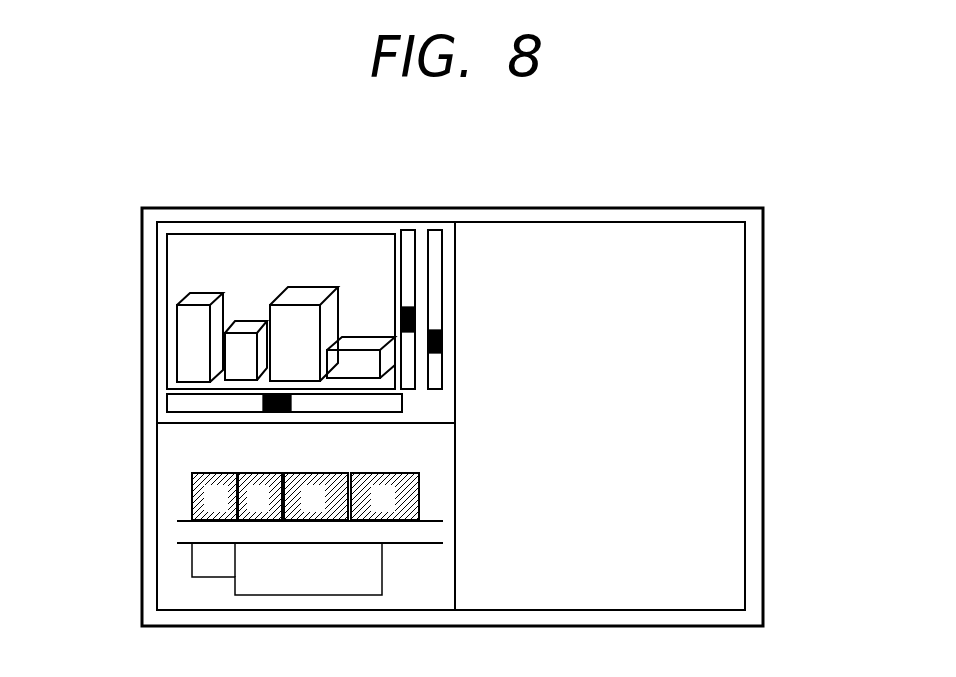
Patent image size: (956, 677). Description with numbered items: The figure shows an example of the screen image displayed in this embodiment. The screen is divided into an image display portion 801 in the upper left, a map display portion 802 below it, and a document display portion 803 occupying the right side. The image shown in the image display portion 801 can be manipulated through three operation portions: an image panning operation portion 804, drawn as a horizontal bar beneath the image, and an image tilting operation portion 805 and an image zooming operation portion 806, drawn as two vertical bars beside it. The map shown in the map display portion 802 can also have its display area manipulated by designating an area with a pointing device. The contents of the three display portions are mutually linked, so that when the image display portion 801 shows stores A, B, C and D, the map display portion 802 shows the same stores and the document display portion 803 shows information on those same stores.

The image display portion 801 is at (156, 315).
The map display portion 802 is at (160, 515).
The document display portion 803 is at (763, 405).
The image panning operation portion 804 is at (167, 398).
The image tilting operation portion 805 is at (408, 230).
The image zooming operation portion 806 is at (436, 230).